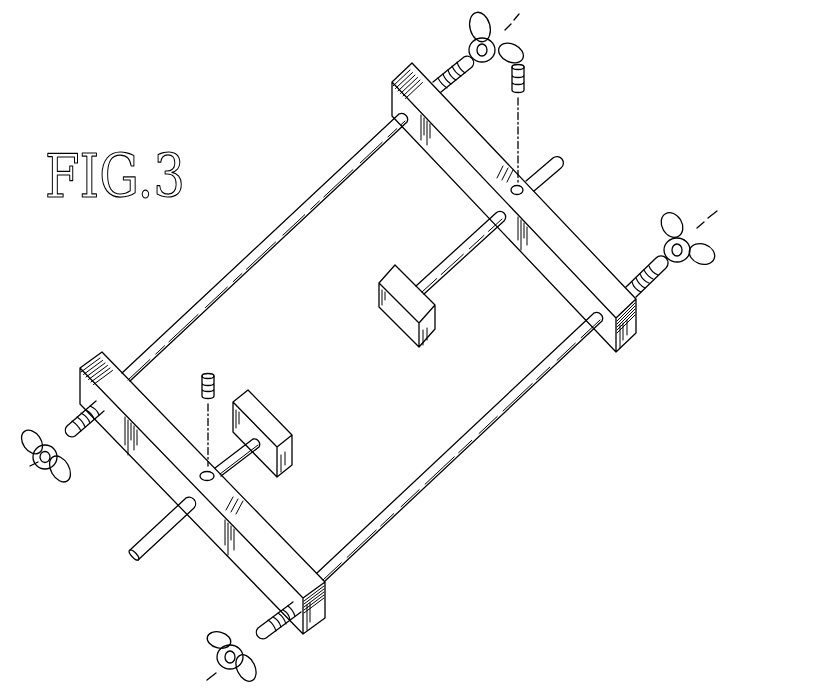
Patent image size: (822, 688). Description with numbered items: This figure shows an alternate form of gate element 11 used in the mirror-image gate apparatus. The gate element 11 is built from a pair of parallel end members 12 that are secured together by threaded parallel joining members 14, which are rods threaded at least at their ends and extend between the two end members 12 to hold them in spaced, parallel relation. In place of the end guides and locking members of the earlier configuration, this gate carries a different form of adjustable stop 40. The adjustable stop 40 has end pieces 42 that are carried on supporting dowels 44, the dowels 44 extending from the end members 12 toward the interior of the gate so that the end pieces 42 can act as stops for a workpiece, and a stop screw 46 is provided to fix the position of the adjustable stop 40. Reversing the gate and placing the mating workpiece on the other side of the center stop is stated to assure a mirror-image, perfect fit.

The gate element 11 is at (670, 115).
The end member 12 is at (463, 138).
The threaded parallel joining member 14 is at (324, 188).
The adjustable stop 40 is at (277, 400).
The end piece 42 is at (283, 433).
The supporting dowel 44 is at (250, 458).
The stop screw 46 is at (210, 373).